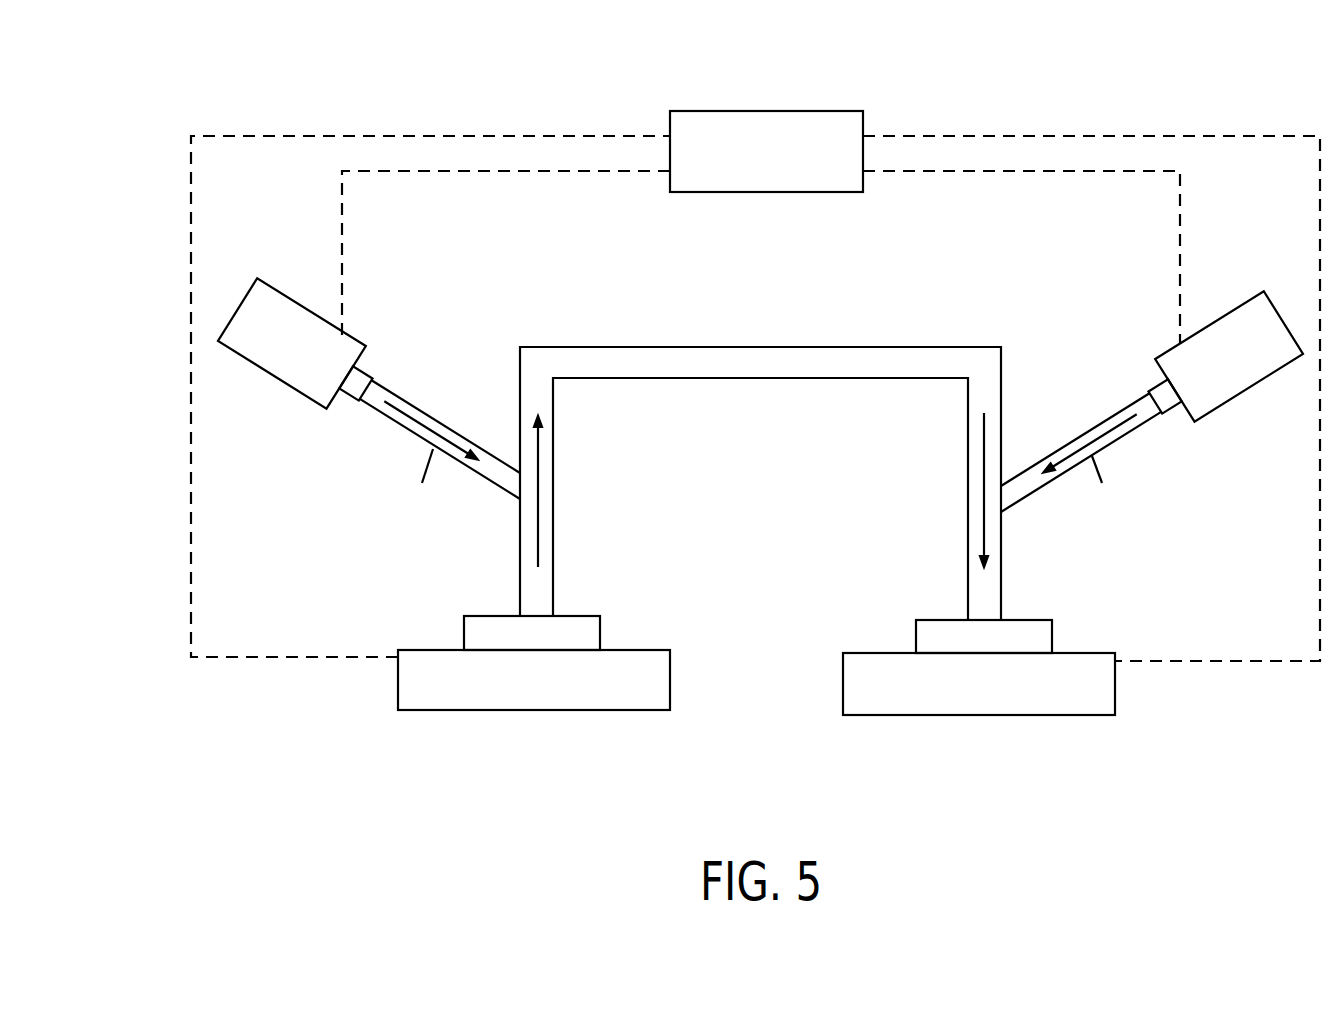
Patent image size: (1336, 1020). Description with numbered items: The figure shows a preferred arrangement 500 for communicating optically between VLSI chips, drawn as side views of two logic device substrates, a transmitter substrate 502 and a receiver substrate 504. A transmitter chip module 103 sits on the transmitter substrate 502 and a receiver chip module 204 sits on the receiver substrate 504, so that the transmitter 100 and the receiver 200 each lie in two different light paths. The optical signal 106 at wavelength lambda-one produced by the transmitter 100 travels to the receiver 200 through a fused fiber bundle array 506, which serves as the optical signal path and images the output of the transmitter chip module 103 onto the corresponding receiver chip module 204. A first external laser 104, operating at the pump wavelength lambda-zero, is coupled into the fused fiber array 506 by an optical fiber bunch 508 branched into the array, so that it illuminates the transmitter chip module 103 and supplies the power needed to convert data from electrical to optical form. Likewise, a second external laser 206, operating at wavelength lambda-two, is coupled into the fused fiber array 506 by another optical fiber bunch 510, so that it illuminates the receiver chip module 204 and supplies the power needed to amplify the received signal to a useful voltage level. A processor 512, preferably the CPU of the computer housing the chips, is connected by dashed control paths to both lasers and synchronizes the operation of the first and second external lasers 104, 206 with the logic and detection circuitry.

The preferred embodiment arrangement 500 is at (221, 92).
The processor 512 is at (770, 111).
The fused fiber bundle array 506 is at (742, 347).
The optical signal 106 is at (540, 473).
The transmitter 100 is at (444, 530).
The first external laser 104 is at (257, 372).
The optical fiber bunch 508 is at (408, 413).
The transmitter chip module 103 is at (493, 616).
The transmitter substrate 502 is at (592, 692).
The receiver 200 is at (1073, 537).
The second external laser 206 is at (1273, 373).
The optical fiber bunch 510 is at (1112, 418).
The receiver chip module 204 is at (1023, 620).
The receiver substrate 504 is at (945, 697).